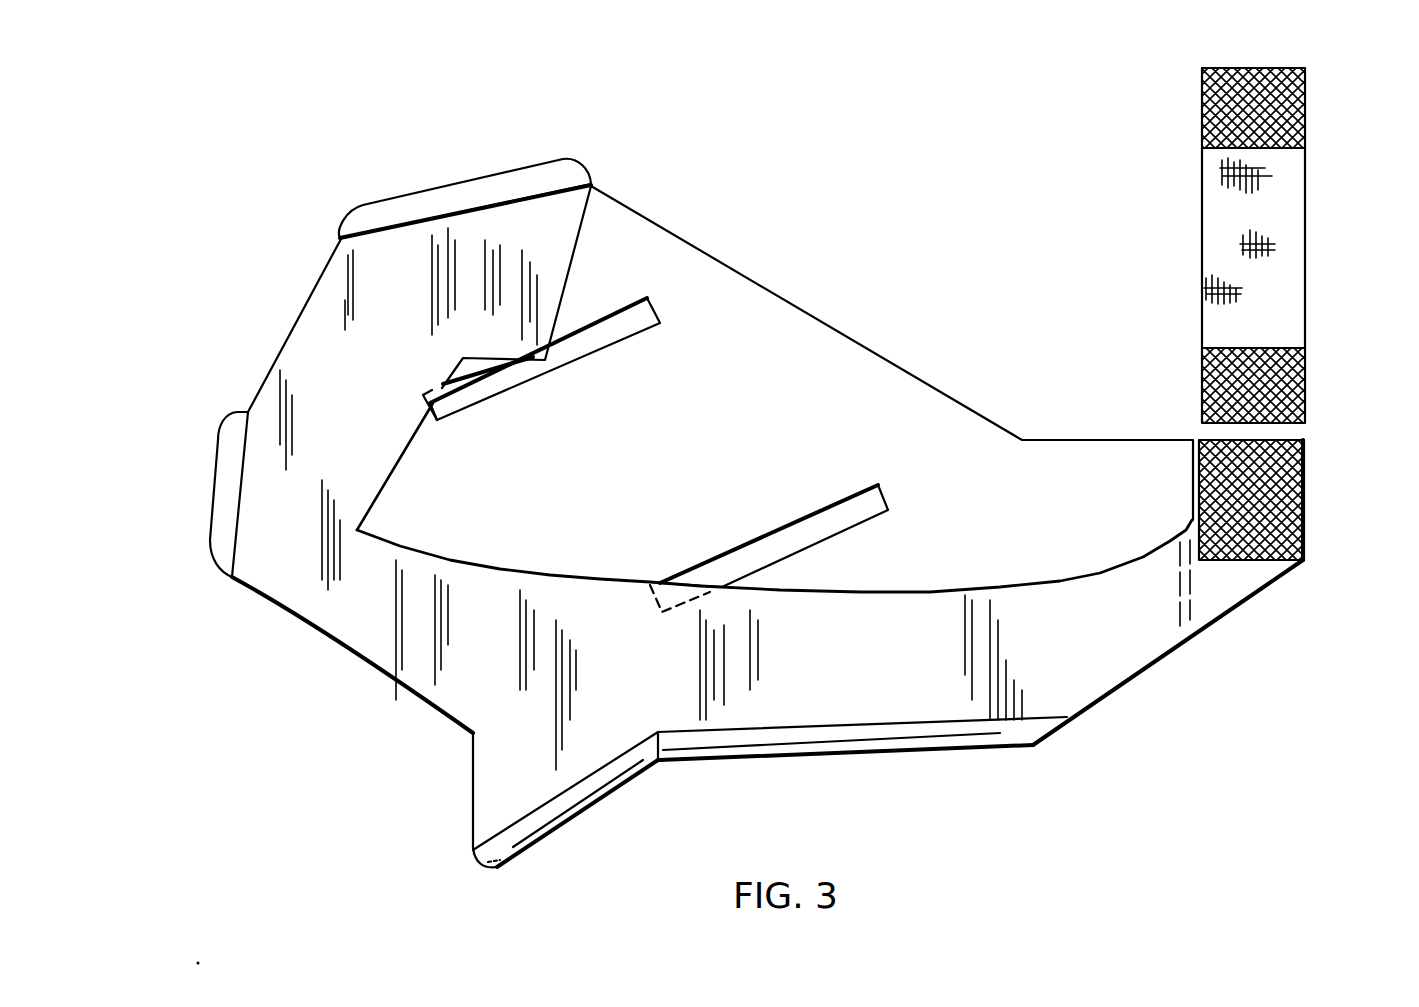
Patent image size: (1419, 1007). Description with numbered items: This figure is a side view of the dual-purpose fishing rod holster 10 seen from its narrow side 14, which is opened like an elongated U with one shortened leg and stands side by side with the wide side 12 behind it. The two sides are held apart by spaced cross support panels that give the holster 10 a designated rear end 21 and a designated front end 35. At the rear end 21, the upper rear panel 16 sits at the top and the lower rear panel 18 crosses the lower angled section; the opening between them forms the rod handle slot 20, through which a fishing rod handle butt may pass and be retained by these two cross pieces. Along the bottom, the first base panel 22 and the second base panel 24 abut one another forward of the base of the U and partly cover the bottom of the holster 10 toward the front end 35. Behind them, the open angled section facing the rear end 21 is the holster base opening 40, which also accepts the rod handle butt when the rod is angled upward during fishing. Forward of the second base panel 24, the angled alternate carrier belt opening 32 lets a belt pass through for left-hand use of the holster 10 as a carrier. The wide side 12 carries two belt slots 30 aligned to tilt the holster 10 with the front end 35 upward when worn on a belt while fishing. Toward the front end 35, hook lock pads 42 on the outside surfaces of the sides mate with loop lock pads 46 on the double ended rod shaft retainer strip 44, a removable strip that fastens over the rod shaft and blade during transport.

The dual-purpose fishing rod holster 10 is at (843, 255).
The wide side 12 is at (882, 382).
The narrow side 14 is at (470, 689).
The upper rear panel 16 is at (450, 184).
The lower rear panel 18 is at (227, 518).
The rod handle slot 20 is at (308, 275).
The rear end 21 is at (247, 388).
The first base panel 22 is at (607, 773).
The second base panel 24 is at (927, 725).
The belt slots 30 is at (603, 347).
The alternate carrier belt opening 32 is at (1183, 668).
The front end 35 is at (1313, 525).
The holster base opening 40 is at (312, 653).
The hook lock pads 42 is at (1193, 440).
The double ended rod shaft retainer strip 44 is at (1228, 225).
The loop lock pads 46 is at (1202, 108).